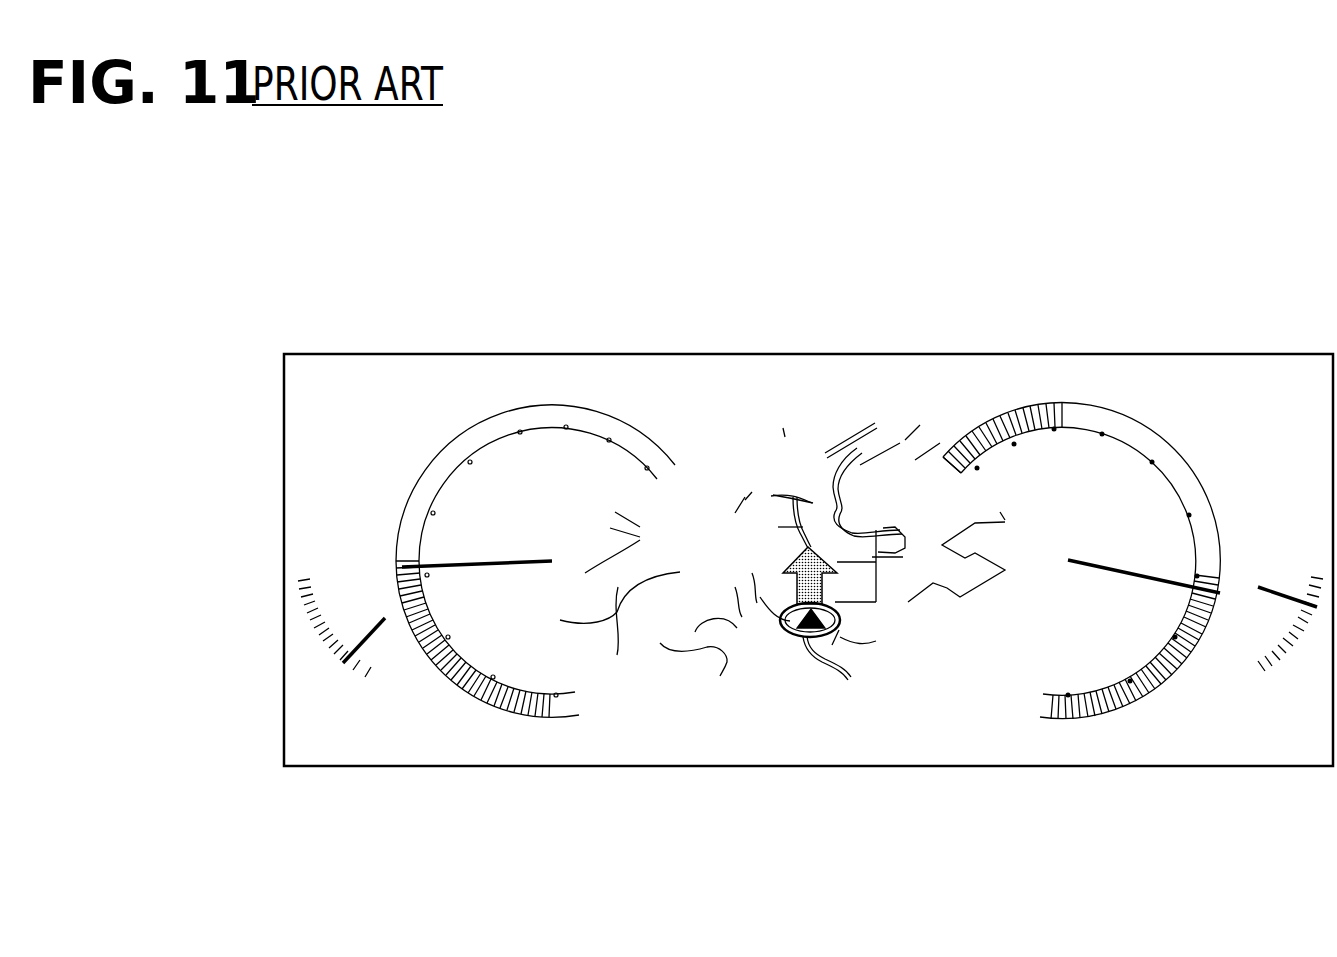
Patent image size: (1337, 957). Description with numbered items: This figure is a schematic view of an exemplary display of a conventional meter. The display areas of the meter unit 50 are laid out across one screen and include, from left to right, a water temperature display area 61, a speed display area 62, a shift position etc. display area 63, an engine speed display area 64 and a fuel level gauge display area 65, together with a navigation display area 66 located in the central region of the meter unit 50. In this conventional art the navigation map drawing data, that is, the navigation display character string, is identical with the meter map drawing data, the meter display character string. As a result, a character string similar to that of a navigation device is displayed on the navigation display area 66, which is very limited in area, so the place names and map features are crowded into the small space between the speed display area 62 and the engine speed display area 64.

The meter unit 50 is at (1155, 354).
The water temperature display area 61 is at (345, 663).
The speed display area 62 is at (538, 697).
The shift position etc. display area 63 is at (800, 567).
The engine speed display area 64 is at (1043, 663).
The fuel level gauge display area 65 is at (1267, 667).
The navigation display area 66 is at (812, 432).